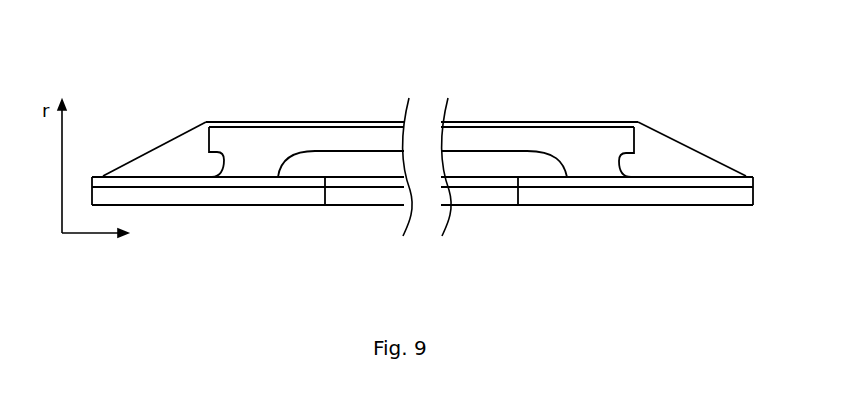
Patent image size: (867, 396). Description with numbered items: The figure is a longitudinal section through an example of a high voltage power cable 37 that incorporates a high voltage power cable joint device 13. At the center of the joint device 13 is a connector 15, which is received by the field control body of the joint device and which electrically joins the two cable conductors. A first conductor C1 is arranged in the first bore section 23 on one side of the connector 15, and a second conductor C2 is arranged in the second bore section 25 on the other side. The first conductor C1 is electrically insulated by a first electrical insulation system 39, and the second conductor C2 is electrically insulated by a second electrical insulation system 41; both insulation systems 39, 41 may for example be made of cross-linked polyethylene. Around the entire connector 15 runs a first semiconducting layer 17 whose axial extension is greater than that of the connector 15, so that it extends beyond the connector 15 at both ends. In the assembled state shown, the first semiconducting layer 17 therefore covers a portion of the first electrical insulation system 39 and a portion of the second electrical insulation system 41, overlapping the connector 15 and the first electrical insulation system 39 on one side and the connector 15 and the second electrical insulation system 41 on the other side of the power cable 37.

The high voltage power cable joint device 13 is at (234, 122).
The connector 15 is at (380, 183).
The first semiconducting layer 17 is at (360, 162).
The first bore section 23 is at (387, 185).
The second bore section 25 is at (486, 184).
The high voltage power cable 37 is at (611, 69).
The first electrical insulation system 39 is at (137, 185).
The second electrical insulation system 41 is at (747, 182).
The first conductor C1 is at (218, 196).
The second conductor C2 is at (637, 196).